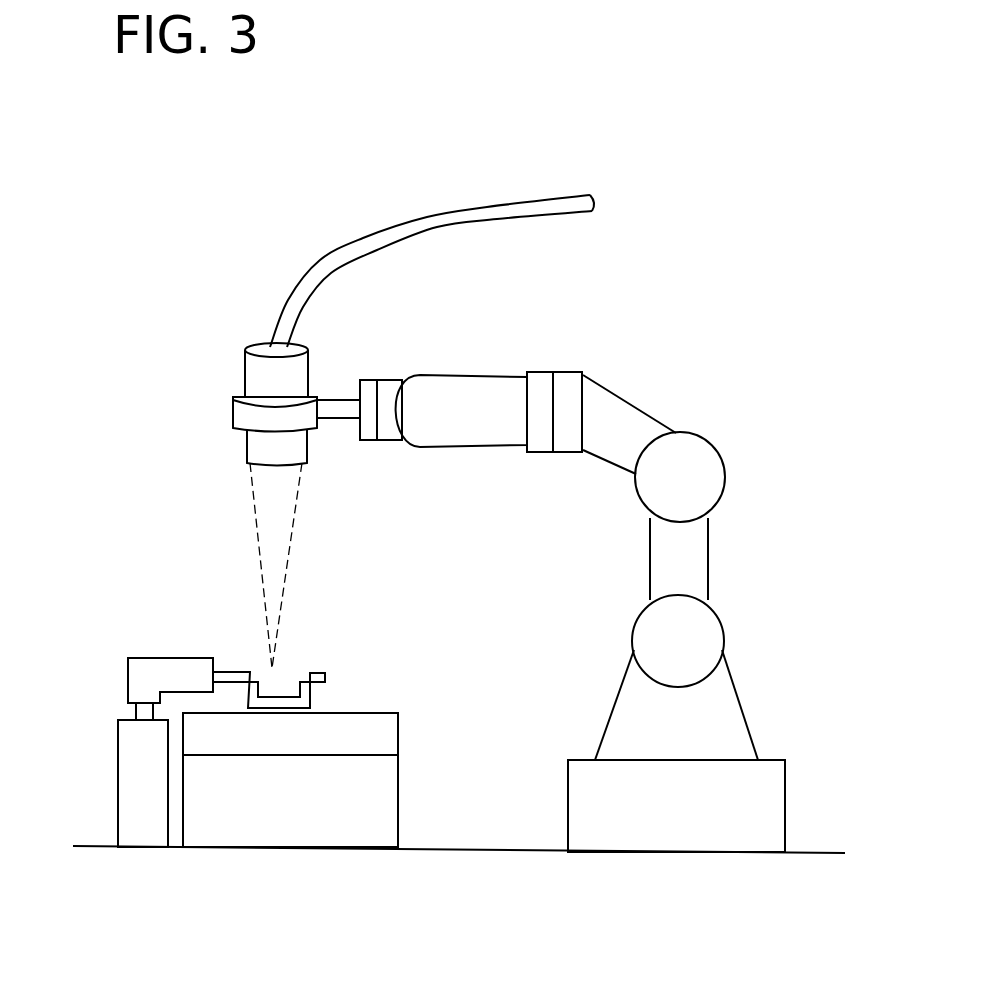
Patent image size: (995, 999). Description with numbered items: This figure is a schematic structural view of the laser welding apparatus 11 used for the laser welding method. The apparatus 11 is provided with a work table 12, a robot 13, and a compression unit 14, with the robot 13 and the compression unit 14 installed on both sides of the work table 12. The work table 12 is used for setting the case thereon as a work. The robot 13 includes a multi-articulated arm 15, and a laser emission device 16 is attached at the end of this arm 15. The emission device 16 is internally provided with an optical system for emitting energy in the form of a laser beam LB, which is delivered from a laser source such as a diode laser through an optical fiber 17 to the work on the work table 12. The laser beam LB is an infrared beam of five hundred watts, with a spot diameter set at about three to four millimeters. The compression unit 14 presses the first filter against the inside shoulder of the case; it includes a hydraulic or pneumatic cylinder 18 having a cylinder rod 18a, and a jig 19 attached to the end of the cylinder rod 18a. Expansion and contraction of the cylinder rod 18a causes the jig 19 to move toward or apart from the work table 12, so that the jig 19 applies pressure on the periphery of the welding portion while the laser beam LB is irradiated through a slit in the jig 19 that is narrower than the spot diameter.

The laser welding apparatus 11 is at (407, 187).
The work table 12 is at (398, 785).
The robot 13 is at (745, 680).
The compression unit 14 is at (118, 738).
The multi-articulated arm 15 is at (455, 388).
The laser emission device 16 is at (257, 445).
The optical fiber 17 is at (464, 225).
The cylinder 18 is at (140, 787).
The cylinder rod 18a is at (133, 712).
The jig 19 is at (310, 673).
The laser beam LB is at (259, 560).